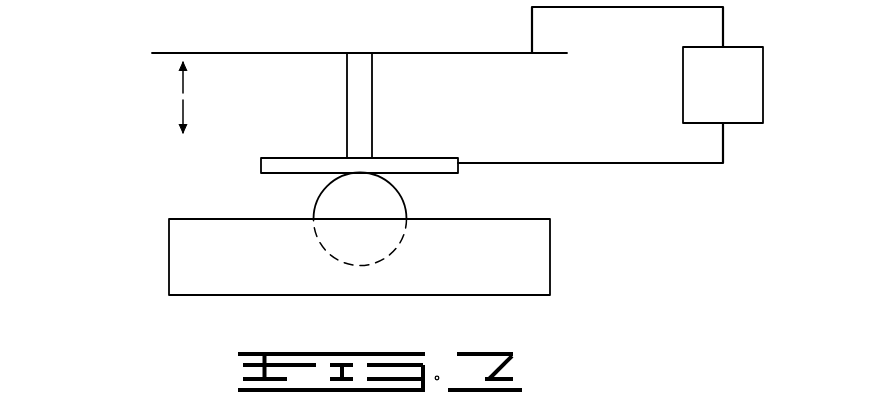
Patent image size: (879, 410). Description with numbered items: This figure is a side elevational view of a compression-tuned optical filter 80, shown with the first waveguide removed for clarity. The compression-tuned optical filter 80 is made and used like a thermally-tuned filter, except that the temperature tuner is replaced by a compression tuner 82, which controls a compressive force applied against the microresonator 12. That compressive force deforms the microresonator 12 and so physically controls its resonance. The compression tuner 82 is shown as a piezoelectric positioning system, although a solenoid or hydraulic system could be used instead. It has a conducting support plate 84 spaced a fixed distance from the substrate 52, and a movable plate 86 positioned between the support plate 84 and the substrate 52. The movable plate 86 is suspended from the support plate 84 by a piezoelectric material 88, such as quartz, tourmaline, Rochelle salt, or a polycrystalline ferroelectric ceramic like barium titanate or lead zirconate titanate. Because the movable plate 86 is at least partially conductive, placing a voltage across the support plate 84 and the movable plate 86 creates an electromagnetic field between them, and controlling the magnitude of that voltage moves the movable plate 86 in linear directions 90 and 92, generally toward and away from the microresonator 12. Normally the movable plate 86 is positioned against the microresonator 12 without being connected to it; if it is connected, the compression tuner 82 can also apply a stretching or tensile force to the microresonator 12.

The microresonator 12 is at (402, 193).
The substrate 52 is at (543, 246).
The compression-tuned optical filter 80 is at (333, 233).
The compression tuner 82 is at (401, 106).
The support plate 84 is at (548, 54).
The movable plate 86 is at (425, 158).
The piezoelectric material 88 is at (331, 97).
The linear direction 90 is at (183, 80).
The linear direction 92 is at (183, 112).